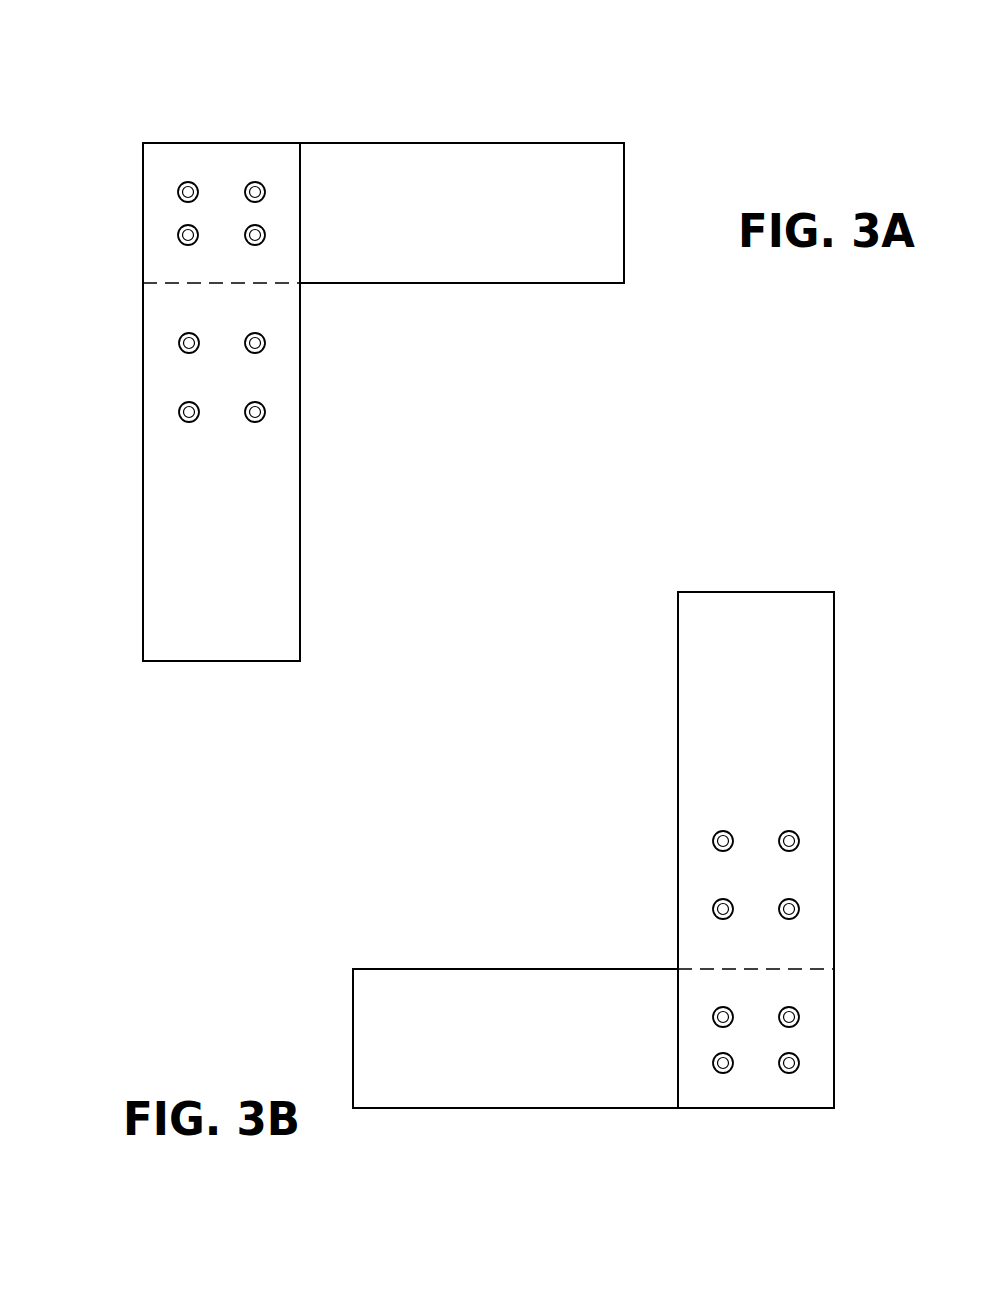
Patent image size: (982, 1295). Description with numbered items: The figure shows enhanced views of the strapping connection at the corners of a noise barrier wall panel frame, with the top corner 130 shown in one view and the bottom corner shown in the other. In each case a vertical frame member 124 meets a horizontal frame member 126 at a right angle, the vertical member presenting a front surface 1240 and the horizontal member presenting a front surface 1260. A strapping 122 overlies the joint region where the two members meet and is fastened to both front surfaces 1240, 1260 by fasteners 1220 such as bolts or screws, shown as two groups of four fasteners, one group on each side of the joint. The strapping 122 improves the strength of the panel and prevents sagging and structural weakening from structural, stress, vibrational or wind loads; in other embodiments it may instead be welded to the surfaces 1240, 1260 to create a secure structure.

In FIG. 3A, the top corner 130 is at (143, 106).
In FIG. 3B, the top corner 130 is at (836, 1145).
In FIG. 3A, the vertical frame member 124 is at (238, 434).
In FIG. 3B, the vertical frame member 124 is at (740, 818).
In FIG. 3A, the front surface of the vertical frame member 1240 is at (246, 562).
In FIG. 3B, the front surface of the vertical frame member 1240 is at (790, 720).
In FIG. 3A, the horizontal frame member 126 is at (462, 159).
In FIG. 3B, the horizontal frame member 126 is at (515, 1093).
In FIG. 3A, the front surface of the horizontal frame member 1260 is at (476, 216).
In FIG. 3B, the front surface of the horizontal frame member 1260 is at (559, 1065).
In FIG. 3A, the strapping 122 is at (290, 372).
In FIG. 3B, the strapping 122 is at (822, 1012).
In FIG. 3A, the fasteners 1220 is at (255, 182).
In FIG. 3B, the fasteners 1220 is at (800, 908).